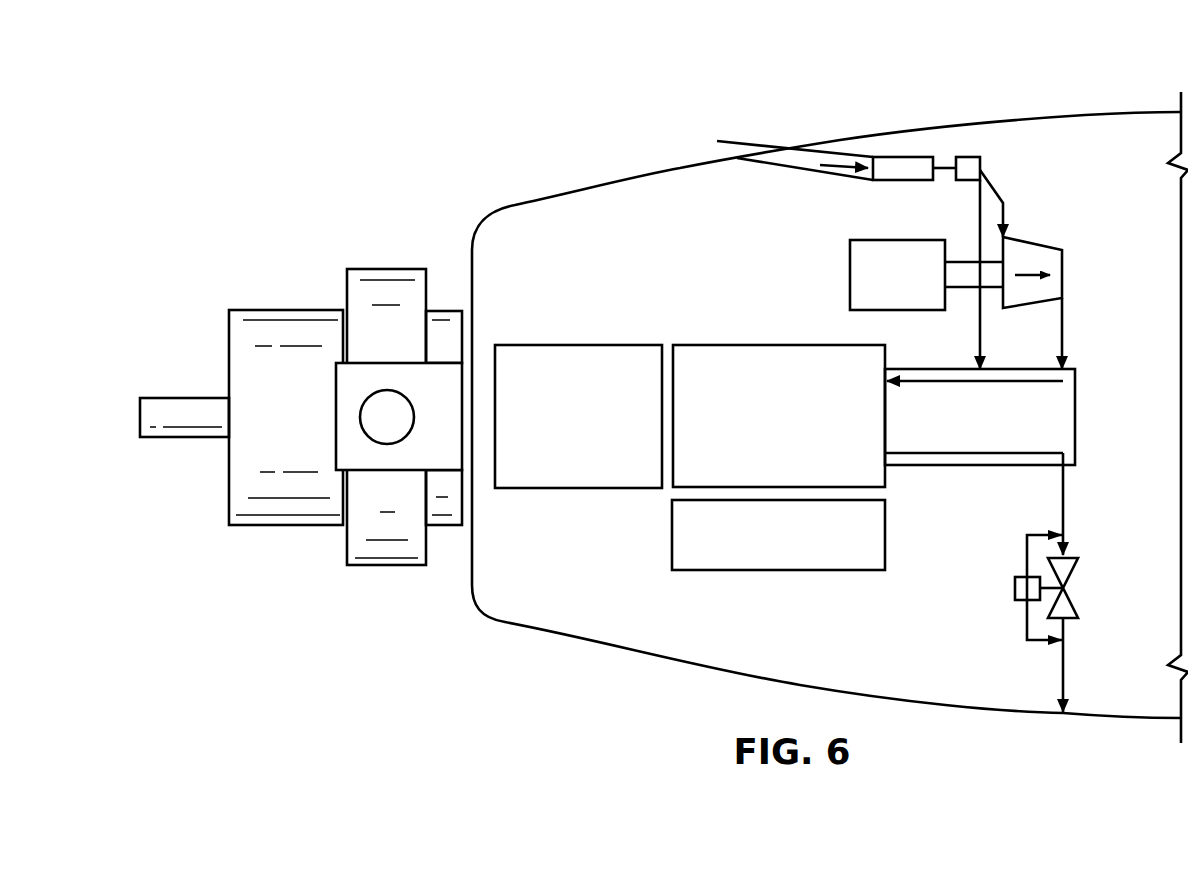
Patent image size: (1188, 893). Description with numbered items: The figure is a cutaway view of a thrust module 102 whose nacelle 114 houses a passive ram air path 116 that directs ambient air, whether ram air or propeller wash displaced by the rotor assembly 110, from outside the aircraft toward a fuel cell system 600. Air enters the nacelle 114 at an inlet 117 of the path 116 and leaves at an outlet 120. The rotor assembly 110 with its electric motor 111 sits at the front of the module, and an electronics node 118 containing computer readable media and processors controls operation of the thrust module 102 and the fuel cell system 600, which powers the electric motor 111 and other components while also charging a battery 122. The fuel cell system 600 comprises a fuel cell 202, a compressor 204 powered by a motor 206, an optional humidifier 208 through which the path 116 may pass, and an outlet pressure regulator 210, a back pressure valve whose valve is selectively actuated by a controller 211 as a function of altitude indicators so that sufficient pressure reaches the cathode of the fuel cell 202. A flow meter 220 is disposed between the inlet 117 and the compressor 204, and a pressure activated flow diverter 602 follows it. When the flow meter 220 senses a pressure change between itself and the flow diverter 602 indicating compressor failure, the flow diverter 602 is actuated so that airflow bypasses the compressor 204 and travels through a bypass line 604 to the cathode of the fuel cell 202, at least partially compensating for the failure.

The thrust module 102 is at (457, 117).
The rotor assembly 110 is at (288, 297).
The electric motor 111 is at (288, 525).
The nacelle 114 is at (1085, 115).
The passive ram air path 116 is at (840, 165).
The inlet 117 is at (785, 143).
The electronics node 118 is at (578, 345).
The outlet 120 is at (1068, 718).
The battery 122 is at (885, 535).
The fuel cell 202 is at (720, 345).
The compressor 204 is at (1035, 240).
The motor 206 is at (850, 270).
The humidifier 208 is at (1065, 415).
The outlet pressure regulator 210 is at (1072, 570).
The controller 211 is at (1013, 590).
The flow meter 220 is at (903, 157).
The fuel cell system 600 is at (692, 323).
The pressure activated flow diverter 602 is at (983, 163).
The bypass line 604 is at (983, 345).